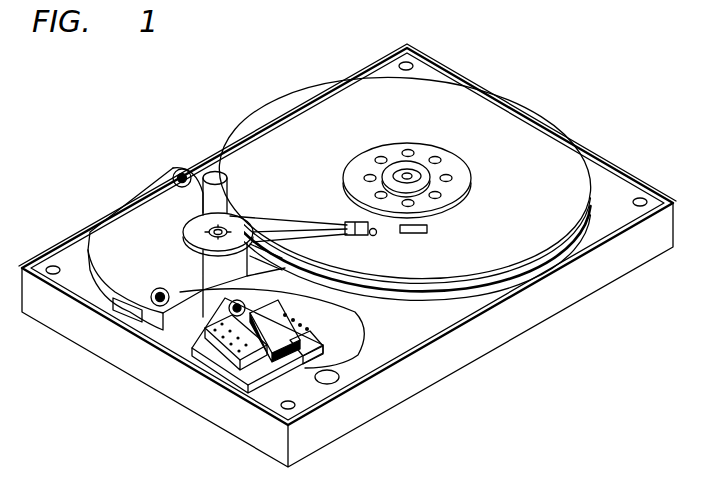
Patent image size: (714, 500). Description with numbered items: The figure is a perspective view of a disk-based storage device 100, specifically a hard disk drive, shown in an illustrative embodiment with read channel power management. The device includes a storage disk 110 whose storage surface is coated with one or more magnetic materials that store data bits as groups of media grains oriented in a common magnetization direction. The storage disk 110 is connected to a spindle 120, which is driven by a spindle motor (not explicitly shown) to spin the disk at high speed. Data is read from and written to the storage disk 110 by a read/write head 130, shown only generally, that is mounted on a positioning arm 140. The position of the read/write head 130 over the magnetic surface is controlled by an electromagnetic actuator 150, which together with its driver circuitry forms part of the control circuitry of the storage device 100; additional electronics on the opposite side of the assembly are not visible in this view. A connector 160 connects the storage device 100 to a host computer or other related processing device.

The disk-based storage device 100 is at (138, 90).
The storage disk 110 is at (515, 115).
The spindle 120 is at (437, 172).
The read/write head 130 is at (403, 231).
The positioning arm 140 is at (279, 223).
The electromagnetic actuator 150 is at (123, 222).
The connector 160 is at (233, 350).